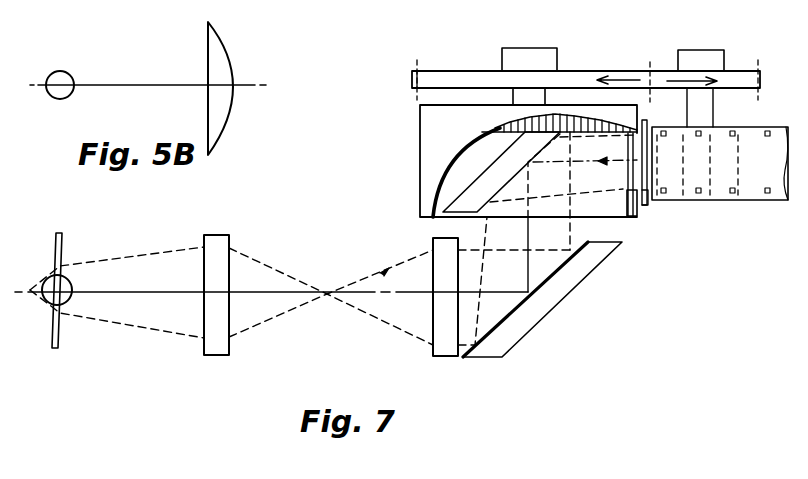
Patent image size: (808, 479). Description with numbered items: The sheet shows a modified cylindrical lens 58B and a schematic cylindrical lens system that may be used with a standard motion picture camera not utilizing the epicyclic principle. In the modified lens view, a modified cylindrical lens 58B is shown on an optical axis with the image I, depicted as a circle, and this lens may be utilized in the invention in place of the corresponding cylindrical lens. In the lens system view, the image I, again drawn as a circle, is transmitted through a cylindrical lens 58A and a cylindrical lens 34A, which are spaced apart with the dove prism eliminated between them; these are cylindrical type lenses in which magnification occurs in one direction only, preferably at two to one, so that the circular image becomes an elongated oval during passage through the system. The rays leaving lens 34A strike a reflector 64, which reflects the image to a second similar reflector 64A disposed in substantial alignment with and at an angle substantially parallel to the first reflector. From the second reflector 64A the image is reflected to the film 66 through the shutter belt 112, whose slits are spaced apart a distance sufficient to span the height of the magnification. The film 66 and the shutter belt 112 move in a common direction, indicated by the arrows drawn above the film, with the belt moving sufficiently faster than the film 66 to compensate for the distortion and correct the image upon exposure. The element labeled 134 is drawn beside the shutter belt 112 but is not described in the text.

In FIG. 5B, the image I is at (62, 73).
In FIG. 5B, the modified cylindrical lens 58B is at (208, 40).
In FIG. 7, the cylindrical lens 58A is at (215, 350).
In FIG. 7, the cylindrical lens 34A is at (446, 357).
In FIG. 7, the reflector 64 is at (543, 307).
In FIG. 7, the second reflector 64A is at (485, 181).
In FIG. 7, the shutter belt 112 is at (633, 222).
In FIG. 7, the exposure slit 134 is at (627, 204).
In FIG. 7, the film 66 is at (785, 127).